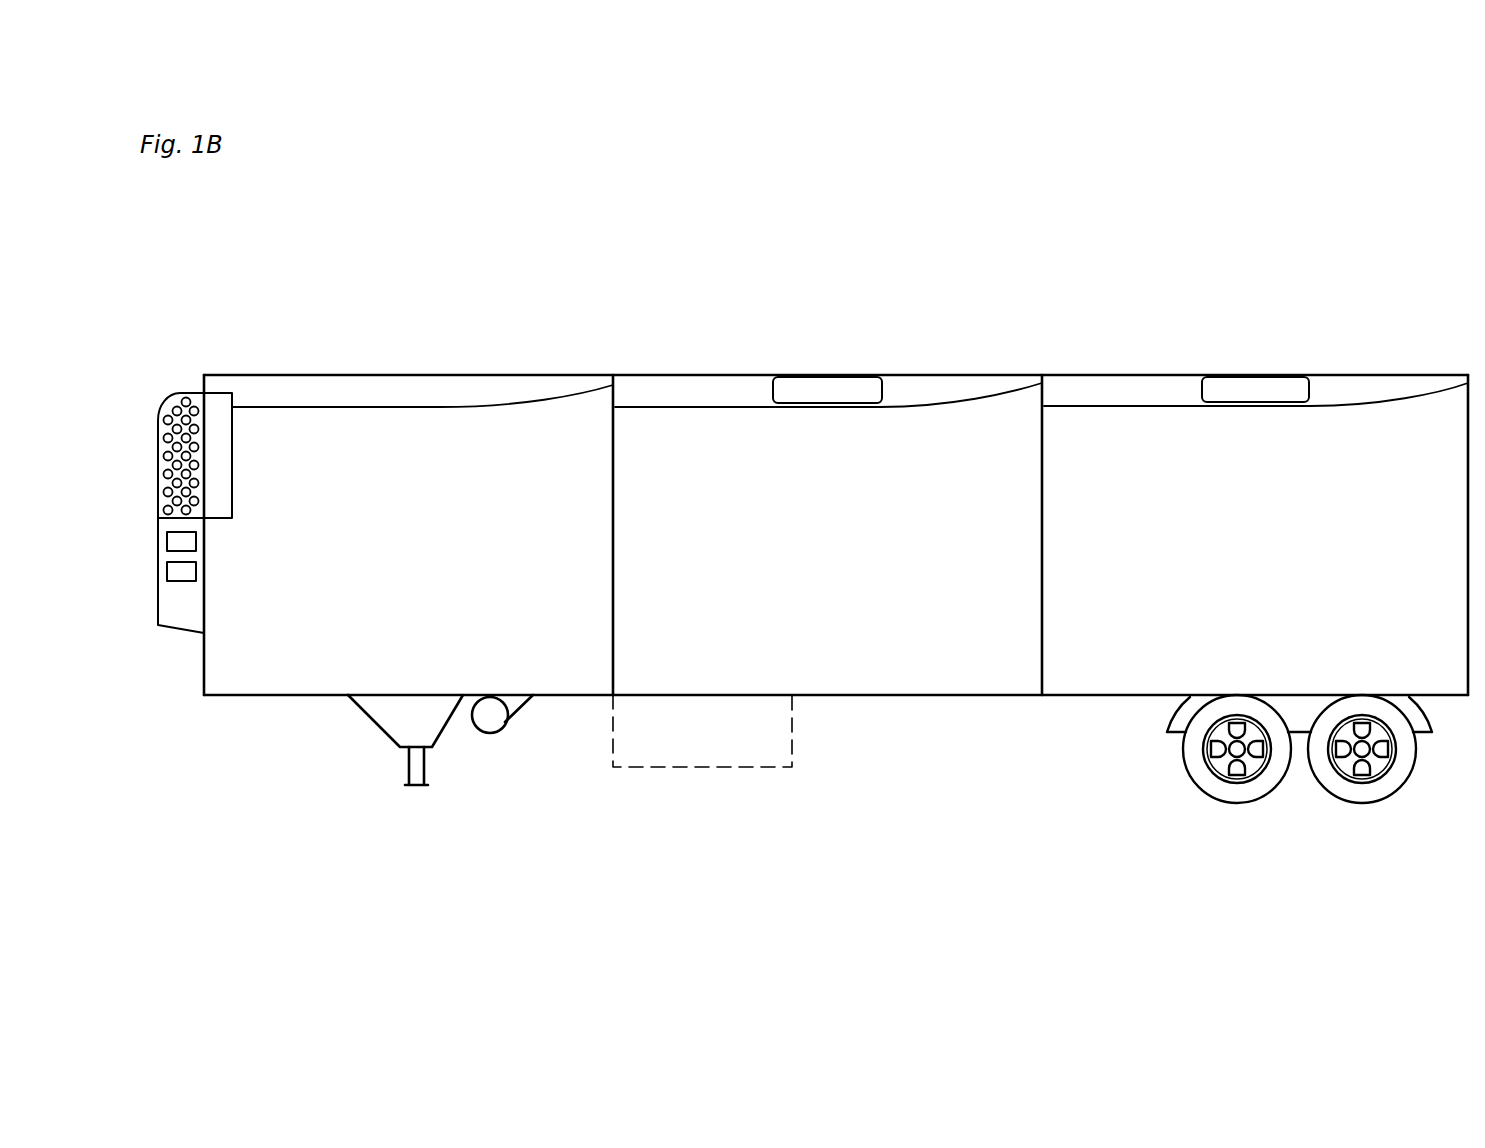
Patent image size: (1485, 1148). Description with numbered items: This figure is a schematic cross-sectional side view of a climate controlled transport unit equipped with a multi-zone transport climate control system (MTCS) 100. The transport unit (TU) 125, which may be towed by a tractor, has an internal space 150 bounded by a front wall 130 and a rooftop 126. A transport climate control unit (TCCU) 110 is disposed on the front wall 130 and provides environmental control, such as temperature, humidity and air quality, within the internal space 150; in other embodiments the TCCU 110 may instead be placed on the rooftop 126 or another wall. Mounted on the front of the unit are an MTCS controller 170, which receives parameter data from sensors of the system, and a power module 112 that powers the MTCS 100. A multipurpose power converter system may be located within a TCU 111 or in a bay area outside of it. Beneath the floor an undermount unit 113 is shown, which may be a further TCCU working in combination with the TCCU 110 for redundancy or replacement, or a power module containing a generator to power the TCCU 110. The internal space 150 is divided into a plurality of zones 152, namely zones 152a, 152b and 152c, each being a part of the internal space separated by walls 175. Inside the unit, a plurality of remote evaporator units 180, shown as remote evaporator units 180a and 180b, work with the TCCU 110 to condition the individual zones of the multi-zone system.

The multi-zone transport climate control system 100 is at (561, 240).
The TCU 111 is at (148, 355).
The TCCU 110 is at (180, 632).
The MTCS controller 170 is at (172, 553).
The power module 112 is at (172, 583).
The front wall 130 is at (203, 673).
The internal space 150 is at (320, 670).
The rooftop 126 is at (442, 375).
The TU 125 is at (1377, 376).
The walls 175 is at (613, 440).
The remote evaporator units 180 is at (1052, 342).
The remote evaporator unit 180a is at (823, 382).
The remote evaporator unit 180b is at (1266, 371).
The zones 152 is at (906, 635).
The zone 152a is at (392, 678).
The zone 152b is at (877, 675).
The zone 152c is at (1255, 601).
The undermount unit 113 is at (703, 767).